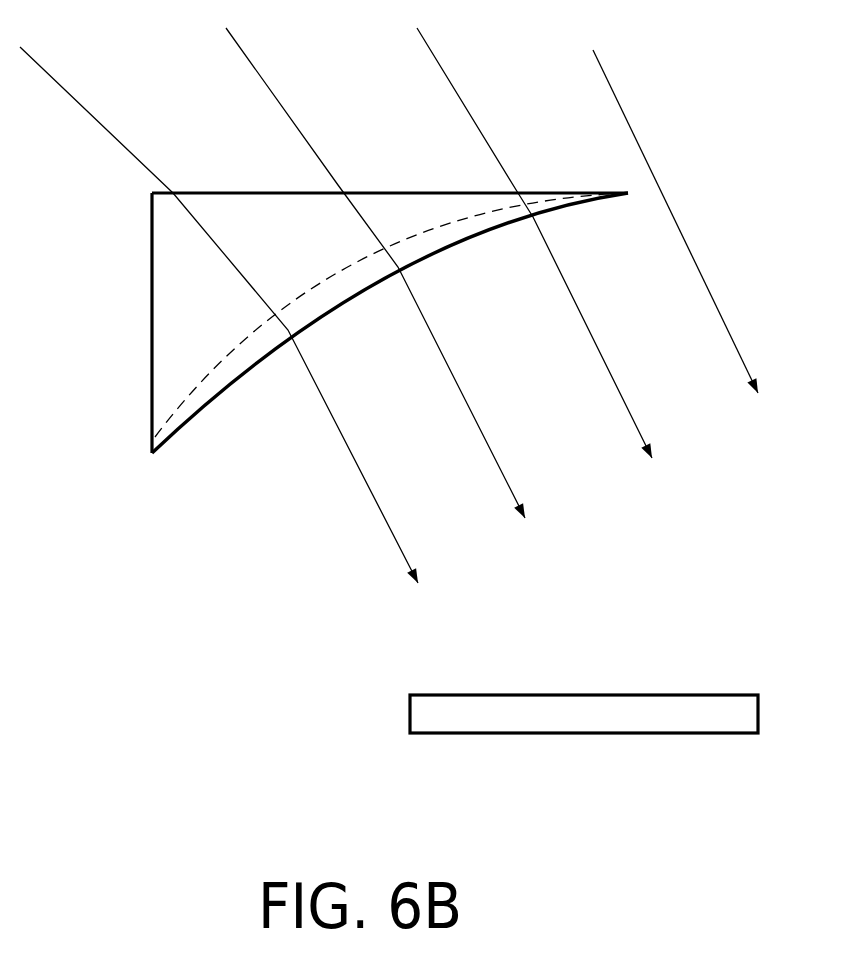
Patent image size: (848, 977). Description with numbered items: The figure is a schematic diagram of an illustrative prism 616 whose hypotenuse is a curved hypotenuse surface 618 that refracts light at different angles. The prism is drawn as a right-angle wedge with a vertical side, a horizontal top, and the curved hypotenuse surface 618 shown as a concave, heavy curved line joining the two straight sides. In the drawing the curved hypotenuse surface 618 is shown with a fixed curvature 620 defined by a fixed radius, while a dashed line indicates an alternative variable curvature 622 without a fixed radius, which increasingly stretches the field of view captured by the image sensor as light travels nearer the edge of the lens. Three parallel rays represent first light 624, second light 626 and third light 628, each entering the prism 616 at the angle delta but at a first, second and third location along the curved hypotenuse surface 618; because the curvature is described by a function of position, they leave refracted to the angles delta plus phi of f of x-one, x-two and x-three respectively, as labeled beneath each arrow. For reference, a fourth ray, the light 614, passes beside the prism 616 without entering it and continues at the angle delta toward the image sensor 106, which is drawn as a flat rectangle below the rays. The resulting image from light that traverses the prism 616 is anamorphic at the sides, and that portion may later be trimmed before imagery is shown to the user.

The image sensor 106 is at (565, 735).
The light 614 is at (741, 360).
The prism 616 is at (112, 470).
The curved hypotenuse surface 618 is at (243, 400).
The fixed curvature 620 is at (187, 413).
The variable curvature 622 is at (172, 397).
The first light 624 is at (390, 535).
The second light 626 is at (500, 480).
The third light 628 is at (634, 428).